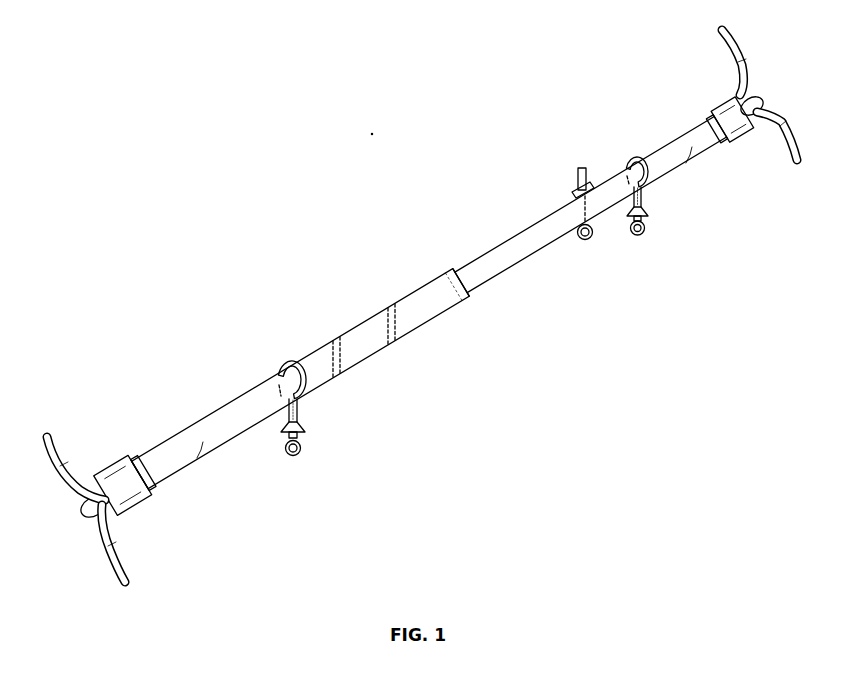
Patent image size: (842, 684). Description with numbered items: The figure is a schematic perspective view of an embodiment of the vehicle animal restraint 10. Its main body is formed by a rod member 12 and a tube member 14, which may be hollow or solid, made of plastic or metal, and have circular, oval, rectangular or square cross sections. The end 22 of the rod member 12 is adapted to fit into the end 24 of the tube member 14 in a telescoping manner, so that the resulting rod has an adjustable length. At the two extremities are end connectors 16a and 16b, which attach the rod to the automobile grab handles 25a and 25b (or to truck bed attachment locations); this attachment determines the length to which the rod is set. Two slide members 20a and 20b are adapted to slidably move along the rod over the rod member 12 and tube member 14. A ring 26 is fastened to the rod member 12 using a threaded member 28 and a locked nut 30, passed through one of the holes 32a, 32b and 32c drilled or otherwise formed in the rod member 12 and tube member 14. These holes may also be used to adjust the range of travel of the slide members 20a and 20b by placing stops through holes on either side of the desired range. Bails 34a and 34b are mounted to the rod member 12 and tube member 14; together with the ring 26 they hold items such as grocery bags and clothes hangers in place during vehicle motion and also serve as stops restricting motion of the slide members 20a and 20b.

The vehicle animal restraint 10 is at (372, 134).
The rod member 12 is at (523, 263).
The tube member 14 is at (355, 327).
The end connector 16a is at (118, 462).
The end connector 16b is at (729, 150).
The slide member 20a is at (289, 362).
The slide member 20b is at (638, 160).
The end of rod member 22 is at (465, 270).
The end of tube member 24 is at (425, 287).
The automobile grab handle 25a is at (108, 587).
The automobile grab handle 25b is at (765, 143).
The ring 26 is at (590, 240).
The threaded member 28 is at (577, 180).
The locked nut 30 is at (583, 185).
The hole 32a is at (340, 377).
The hole 32b is at (393, 344).
The hole 32c is at (583, 222).
The bail 34a is at (197, 458).
The bail 34b is at (686, 163).